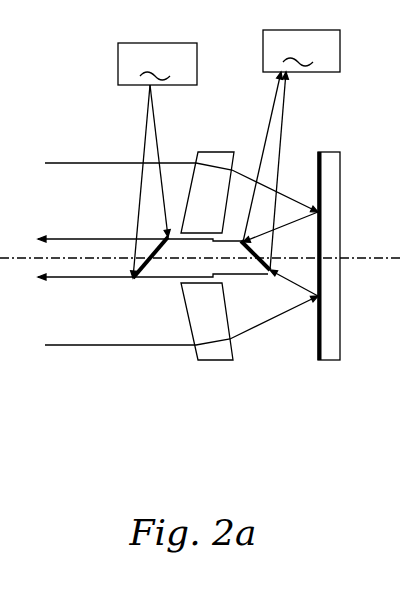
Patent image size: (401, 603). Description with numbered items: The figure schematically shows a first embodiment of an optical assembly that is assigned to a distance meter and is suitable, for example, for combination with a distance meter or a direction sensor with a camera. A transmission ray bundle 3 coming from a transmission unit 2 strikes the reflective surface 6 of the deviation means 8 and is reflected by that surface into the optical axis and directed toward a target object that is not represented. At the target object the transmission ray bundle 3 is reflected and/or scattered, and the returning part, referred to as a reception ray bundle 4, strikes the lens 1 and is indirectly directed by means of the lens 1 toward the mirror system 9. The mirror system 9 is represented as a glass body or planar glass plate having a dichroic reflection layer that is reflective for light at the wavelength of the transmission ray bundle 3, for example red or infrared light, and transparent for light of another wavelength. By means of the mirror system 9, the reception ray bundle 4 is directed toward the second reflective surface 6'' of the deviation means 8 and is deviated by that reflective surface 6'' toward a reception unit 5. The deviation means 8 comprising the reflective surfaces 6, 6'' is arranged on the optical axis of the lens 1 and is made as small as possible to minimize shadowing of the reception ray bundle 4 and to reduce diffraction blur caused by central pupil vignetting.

The lens 1 is at (214, 158).
The transmission unit 2 is at (157, 160).
The transmission ray bundle 3 is at (62, 277).
The reception ray bundle 4 is at (55, 163).
The reception unit 5 is at (291, 150).
The reflective surface 6 is at (150, 335).
The reflective surface 6'' is at (279, 323).
The deviation means 8 is at (228, 258).
The mirror system 9 is at (331, 152).